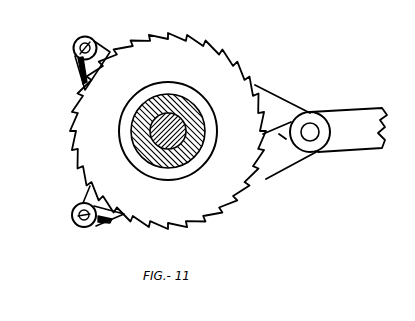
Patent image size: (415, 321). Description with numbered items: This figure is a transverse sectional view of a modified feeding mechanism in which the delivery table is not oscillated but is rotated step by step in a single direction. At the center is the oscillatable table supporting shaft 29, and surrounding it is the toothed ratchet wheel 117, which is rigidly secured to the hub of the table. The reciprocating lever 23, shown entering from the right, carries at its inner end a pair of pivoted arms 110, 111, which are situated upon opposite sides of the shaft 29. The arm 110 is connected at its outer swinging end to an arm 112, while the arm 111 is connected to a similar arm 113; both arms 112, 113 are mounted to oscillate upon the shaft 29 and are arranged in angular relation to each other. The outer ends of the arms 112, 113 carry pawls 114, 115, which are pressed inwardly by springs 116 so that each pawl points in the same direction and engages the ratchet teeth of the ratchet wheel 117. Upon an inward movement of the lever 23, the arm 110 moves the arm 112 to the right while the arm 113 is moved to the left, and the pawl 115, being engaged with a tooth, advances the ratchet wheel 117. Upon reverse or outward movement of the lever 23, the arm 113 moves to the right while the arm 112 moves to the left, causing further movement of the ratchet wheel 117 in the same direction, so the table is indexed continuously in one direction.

The lever 23 is at (360, 140).
The oscillatable shaft 29 is at (186, 137).
The arm 110 is at (186, 127).
The arm 111 is at (306, 84).
The arm 112 is at (80, 203).
The arm 113 is at (133, 32).
The pawl 114 is at (98, 222).
The pawl 115 is at (78, 77).
The spring 116 is at (73, 49).
The ratchet wheel 117 is at (240, 32).